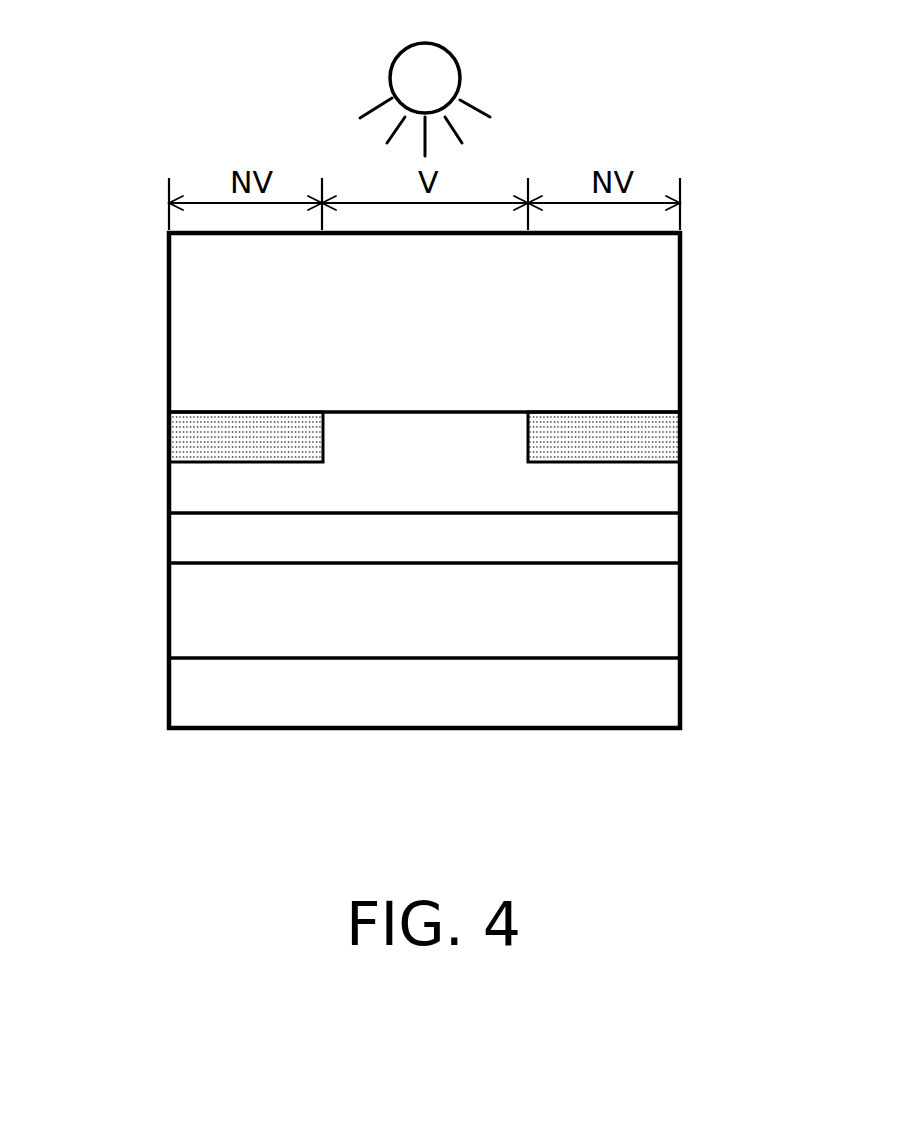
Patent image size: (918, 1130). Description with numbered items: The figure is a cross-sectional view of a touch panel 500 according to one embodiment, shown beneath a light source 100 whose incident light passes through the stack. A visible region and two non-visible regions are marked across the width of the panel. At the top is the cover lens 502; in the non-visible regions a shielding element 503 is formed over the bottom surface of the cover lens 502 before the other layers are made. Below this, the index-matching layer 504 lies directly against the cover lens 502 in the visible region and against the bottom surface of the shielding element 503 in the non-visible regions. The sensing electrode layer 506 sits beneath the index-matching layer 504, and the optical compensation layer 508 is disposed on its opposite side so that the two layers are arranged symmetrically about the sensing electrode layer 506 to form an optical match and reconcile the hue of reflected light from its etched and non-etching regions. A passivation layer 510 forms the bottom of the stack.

The light source (sun) 100 is at (460, 70).
The touch panel 500 is at (134, 96).
The cover lens 502 is at (665, 322).
The shielding element 503 is at (168, 441).
The index-matching layer 504 is at (665, 490).
The sensing electrode layer 506 is at (665, 547).
The optical compensation layer 508 is at (665, 615).
The passivation layer 510 is at (665, 689).